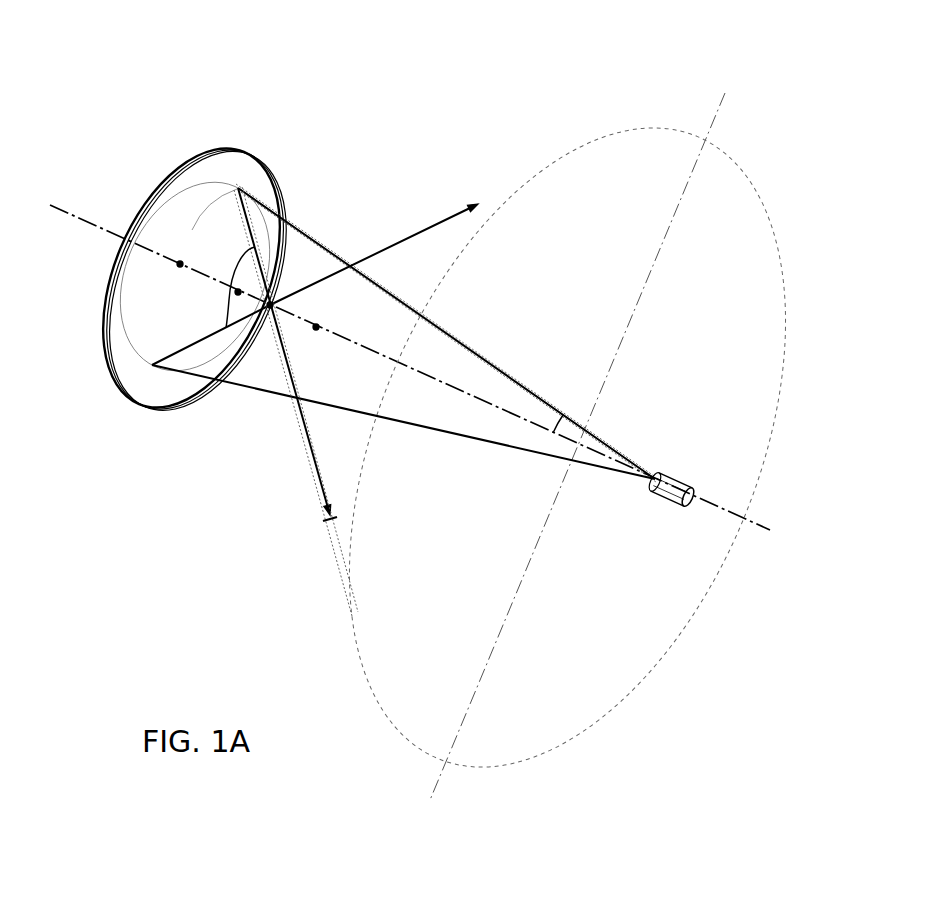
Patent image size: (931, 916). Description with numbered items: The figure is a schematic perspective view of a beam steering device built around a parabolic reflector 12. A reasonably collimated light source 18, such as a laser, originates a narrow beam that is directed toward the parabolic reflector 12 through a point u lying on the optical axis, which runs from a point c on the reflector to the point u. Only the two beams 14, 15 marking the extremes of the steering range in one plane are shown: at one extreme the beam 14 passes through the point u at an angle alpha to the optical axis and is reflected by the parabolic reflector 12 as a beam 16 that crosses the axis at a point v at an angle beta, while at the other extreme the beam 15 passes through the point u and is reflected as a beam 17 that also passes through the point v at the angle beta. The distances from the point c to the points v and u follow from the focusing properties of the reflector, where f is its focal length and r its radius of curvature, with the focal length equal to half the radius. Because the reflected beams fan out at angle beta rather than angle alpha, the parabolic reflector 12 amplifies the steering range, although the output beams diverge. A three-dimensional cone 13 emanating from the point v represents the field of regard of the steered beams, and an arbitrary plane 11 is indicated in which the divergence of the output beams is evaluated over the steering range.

The arbitrary plane 11 is at (712, 120).
The parabolic reflector 12 is at (176, 175).
The three-dimensional cone 13 is at (357, 615).
The beam 14 is at (513, 374).
The beam 15 is at (418, 428).
The beam 16 is at (320, 470).
The beam 17 is at (436, 226).
The collimated light source 18 is at (667, 496).
The point c is at (180, 265).
The focal length f is at (238, 292).
The point v is at (270, 306).
The radius of curvature r is at (316, 327).
The point u is at (657, 473).